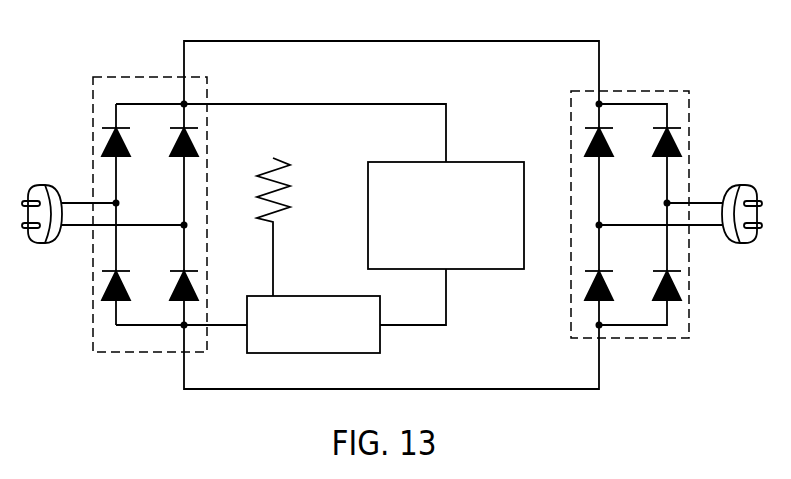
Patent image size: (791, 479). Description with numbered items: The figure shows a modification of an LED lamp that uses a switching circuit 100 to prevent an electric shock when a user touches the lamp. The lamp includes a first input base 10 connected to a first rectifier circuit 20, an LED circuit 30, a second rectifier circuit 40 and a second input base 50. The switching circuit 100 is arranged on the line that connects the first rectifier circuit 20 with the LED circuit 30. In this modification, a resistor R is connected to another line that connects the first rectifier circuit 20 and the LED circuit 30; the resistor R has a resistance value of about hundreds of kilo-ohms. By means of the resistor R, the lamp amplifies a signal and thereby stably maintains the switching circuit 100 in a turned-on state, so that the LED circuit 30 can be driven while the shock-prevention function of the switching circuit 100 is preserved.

The first input base 10 is at (43, 184).
The first rectifier circuit 20 is at (129, 77).
The LED circuit 30 is at (497, 162).
The second rectifier circuit 40 is at (647, 91).
The second input base 50 is at (734, 185).
The switching circuit 100 is at (324, 296).
The resistor R is at (284, 227).